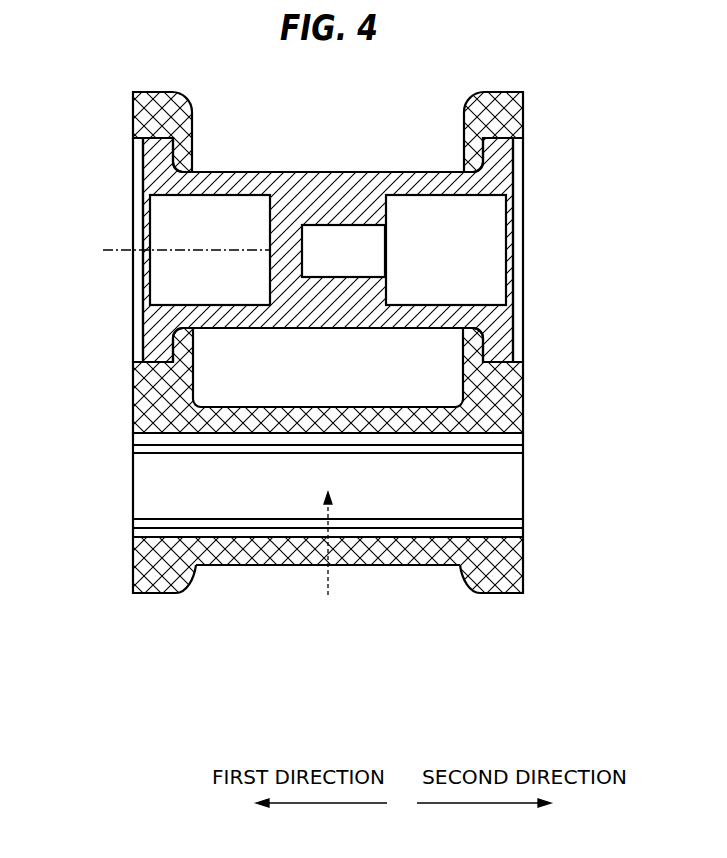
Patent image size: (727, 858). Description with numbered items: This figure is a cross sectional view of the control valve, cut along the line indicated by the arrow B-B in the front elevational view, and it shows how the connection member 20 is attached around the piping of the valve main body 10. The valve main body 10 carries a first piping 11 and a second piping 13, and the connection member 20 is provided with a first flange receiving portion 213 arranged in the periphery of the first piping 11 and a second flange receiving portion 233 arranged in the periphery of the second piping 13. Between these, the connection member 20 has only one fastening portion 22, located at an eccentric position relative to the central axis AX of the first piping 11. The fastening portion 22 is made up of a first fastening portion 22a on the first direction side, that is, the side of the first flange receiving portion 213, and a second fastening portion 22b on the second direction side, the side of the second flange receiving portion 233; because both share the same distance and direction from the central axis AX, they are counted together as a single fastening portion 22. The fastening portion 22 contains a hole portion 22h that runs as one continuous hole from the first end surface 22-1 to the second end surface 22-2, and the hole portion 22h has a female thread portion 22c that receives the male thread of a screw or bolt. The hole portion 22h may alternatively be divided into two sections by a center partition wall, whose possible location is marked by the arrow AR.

The first flange receiving portion 213 is at (137, 114).
The second flange receiving portion 233 is at (523, 117).
The valve main body 10 is at (344, 174).
The first piping 11 is at (226, 174).
The second piping 13 is at (430, 174).
The central axis AX is at (171, 250).
The connection member 20 is at (525, 387).
The first fastening portion 22a is at (132, 406).
The second fastening portion 22b is at (525, 413).
The female thread portion 22c is at (498, 453).
The hole portion 22h is at (142, 487).
The fastening portion 22 is at (132, 580).
The first end surface 22-1 is at (132, 549).
The second end surface 22-2 is at (525, 550).
The arrow AR is at (328, 559).